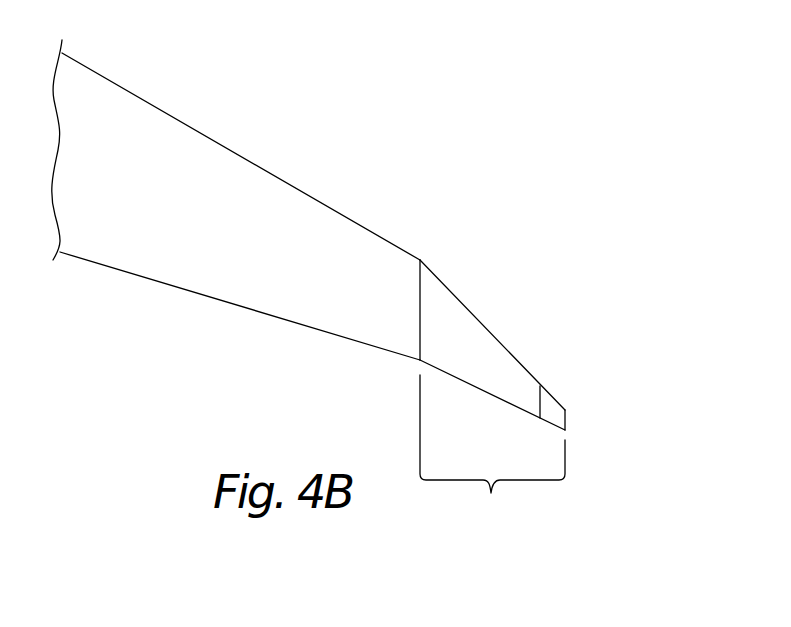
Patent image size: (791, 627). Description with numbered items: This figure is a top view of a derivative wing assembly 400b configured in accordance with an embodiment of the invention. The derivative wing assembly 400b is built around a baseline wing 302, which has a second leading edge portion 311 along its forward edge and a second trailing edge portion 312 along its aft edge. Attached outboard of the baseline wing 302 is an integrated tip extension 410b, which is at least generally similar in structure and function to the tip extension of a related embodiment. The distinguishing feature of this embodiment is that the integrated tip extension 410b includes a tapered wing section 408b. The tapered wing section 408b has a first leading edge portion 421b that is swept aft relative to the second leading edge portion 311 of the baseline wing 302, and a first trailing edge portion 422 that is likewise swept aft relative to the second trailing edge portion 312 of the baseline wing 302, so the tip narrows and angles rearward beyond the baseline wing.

The derivative wing assembly 400b is at (390, 100).
The baseline wing 302 is at (165, 137).
The second leading edge portion 311 is at (302, 192).
The second trailing edge portion 312 is at (230, 305).
The first leading edge portion 421b is at (455, 292).
The tapered wing section 408b is at (493, 357).
The first trailing edge portion 422 is at (420, 338).
The integrated tip extension 410b is at (491, 493).